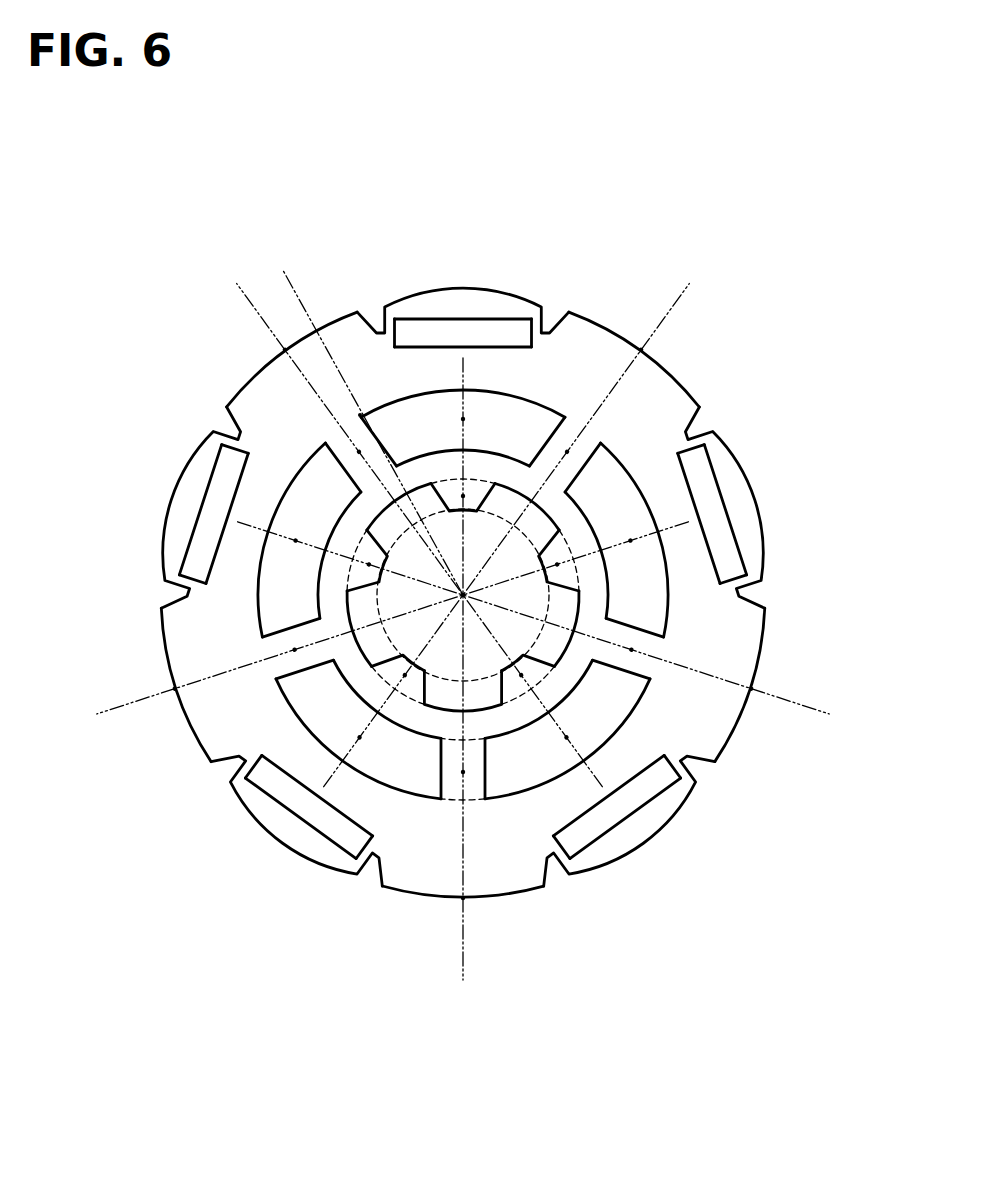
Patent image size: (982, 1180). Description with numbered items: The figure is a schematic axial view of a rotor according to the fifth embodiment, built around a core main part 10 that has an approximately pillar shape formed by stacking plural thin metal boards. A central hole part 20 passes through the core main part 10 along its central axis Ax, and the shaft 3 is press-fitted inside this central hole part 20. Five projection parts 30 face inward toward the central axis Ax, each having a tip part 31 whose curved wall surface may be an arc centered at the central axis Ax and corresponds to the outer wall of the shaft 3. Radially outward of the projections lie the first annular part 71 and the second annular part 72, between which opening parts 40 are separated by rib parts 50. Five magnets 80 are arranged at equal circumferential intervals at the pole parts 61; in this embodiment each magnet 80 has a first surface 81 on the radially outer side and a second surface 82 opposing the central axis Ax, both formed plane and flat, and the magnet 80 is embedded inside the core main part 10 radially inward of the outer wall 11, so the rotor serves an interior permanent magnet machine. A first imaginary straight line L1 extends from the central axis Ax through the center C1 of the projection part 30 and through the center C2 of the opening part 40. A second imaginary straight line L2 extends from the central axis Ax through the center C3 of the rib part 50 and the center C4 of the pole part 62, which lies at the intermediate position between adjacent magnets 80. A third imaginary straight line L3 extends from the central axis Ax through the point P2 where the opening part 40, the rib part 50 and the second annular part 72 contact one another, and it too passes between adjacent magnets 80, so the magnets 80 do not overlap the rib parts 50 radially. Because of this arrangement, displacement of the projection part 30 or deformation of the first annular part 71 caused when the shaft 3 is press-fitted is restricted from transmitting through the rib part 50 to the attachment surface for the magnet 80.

The shaft 3 is at (588, 525).
The core main part 10 is at (464, 602).
The outer wall 11 is at (605, 327).
The central hole part 20 is at (507, 490).
The projection part 30 is at (468, 597).
The tip part 31 is at (405, 462).
The opening part 40 is at (430, 445).
The rib part 50 is at (530, 420).
The pole part 61 is at (462, 559).
The pole part 62 is at (658, 362).
The first annular part 71 is at (431, 722).
The second annular part 72 is at (425, 820).
The magnet 80 is at (443, 323).
The first surface 81 is at (500, 318).
The second surface 82 is at (497, 350).
The central axis Ax is at (463, 595).
The first imaginary straight line L1 is at (462, 358).
The second imaginary straight line L2 is at (677, 300).
The third imaginary straight line L3 is at (287, 274).
The point P2 is at (360, 415).
The center of the projection part C1 is at (463, 496).
The center of the opening part C2 is at (463, 419).
The center of the rib part C3 is at (567, 452).
The center of the pole part C4 is at (641, 350).